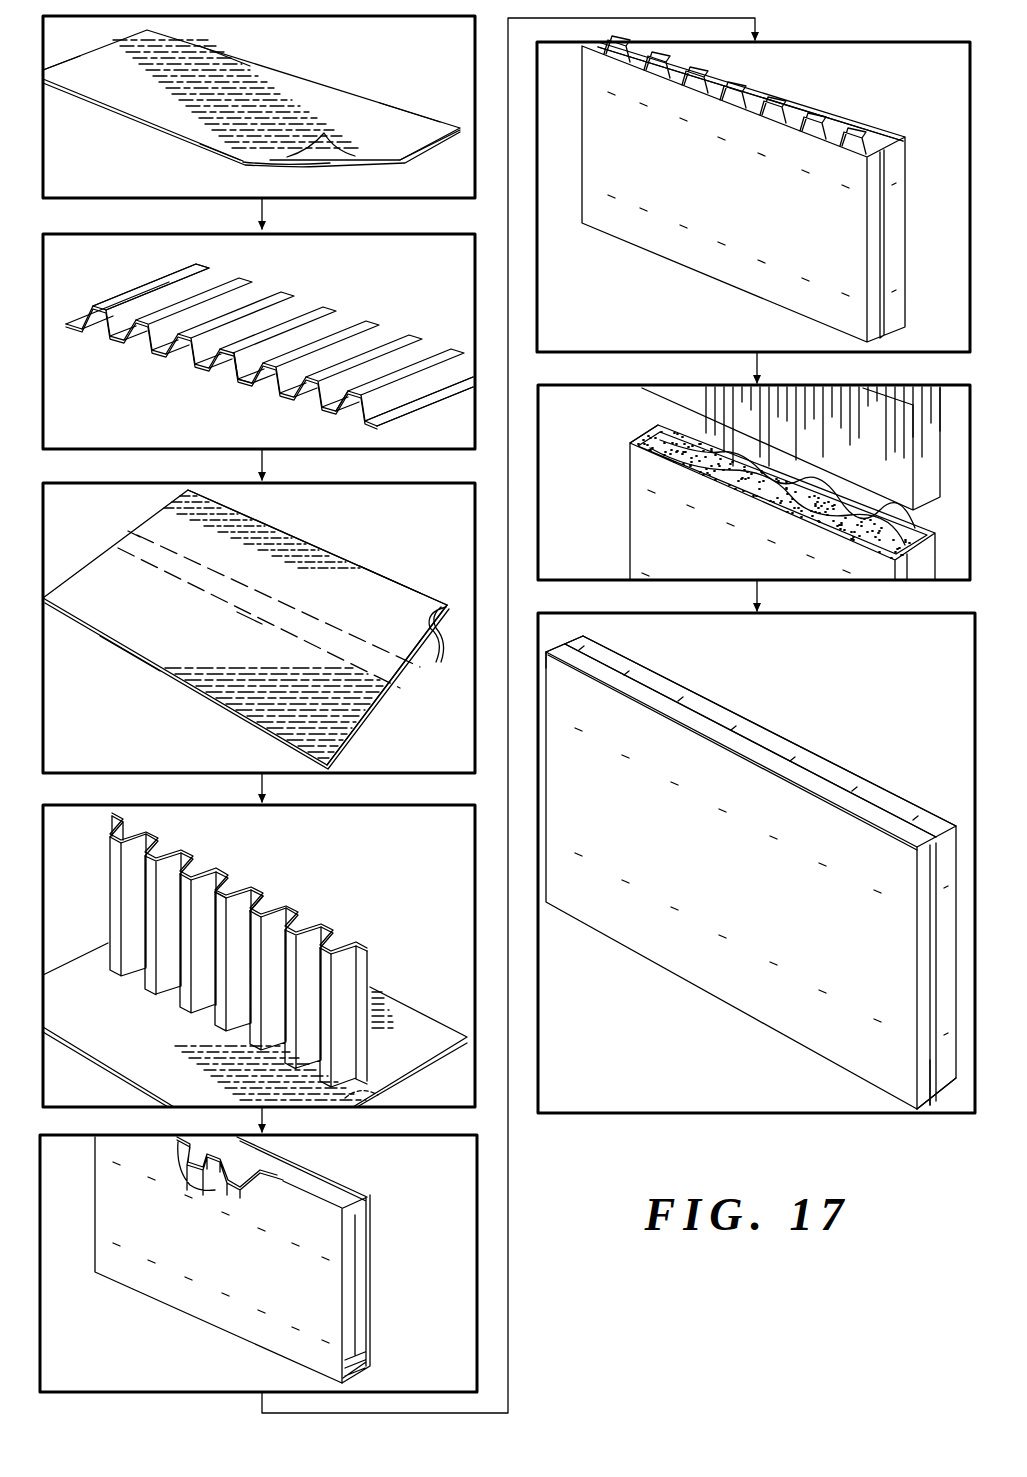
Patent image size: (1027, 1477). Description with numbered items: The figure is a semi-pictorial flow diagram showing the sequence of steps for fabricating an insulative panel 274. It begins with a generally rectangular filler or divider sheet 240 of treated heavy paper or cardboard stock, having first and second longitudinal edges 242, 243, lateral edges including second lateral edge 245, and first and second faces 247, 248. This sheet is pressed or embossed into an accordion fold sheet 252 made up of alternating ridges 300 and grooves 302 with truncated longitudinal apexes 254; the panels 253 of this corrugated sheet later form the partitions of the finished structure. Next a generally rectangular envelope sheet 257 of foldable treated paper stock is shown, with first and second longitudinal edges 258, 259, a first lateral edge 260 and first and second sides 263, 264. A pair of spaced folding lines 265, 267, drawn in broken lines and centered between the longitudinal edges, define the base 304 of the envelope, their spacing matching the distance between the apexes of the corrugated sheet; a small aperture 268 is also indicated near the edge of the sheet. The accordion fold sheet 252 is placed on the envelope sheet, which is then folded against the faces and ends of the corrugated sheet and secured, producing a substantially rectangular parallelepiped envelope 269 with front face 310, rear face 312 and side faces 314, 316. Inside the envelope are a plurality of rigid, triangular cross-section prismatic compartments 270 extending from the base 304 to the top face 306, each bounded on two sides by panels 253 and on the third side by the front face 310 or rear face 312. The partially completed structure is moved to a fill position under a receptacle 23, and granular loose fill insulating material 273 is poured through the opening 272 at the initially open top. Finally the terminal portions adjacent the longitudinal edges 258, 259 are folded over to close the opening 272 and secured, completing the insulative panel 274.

The receptacle 23 is at (626, 399).
The divider sheet 240 is at (331, 81).
The first longitudinal edge 242 is at (407, 110).
The second longitudinal edge 243 is at (203, 157).
The second lateral edge 245 is at (64, 63).
The first face 247 is at (242, 62).
The second face 248 is at (333, 150).
The accordion fold sheet 252 is at (337, 913).
The panels 253 is at (444, 356).
The truncated longitudinal apex 254 is at (196, 266).
The envelope sheet 257 is at (356, 528).
The first longitudinal edge 258 is at (306, 542).
The second longitudinal edge 259 is at (138, 662).
The first lateral edge 260 is at (408, 693).
The first side 263 is at (390, 590).
The second side 264 is at (450, 607).
The folding line 265 is at (163, 520).
The folding line 267 is at (248, 614).
The aperture 268 is at (372, 1085).
The envelope 269 is at (686, 280).
The prismatic compartments 270 is at (705, 80).
The opening 272 is at (790, 108).
The granular loose fill insulating material 273 is at (786, 462).
The insulative panel 274 is at (882, 787).
The ridges 300 is at (293, 292).
The grooves 302 is at (333, 405).
The base 304 is at (127, 548).
The top face 306 is at (651, 699).
The front face 310 is at (210, 1272).
The rear face 312 is at (448, 641).
The side face 314 is at (923, 1070).
The side face 316 is at (549, 667).